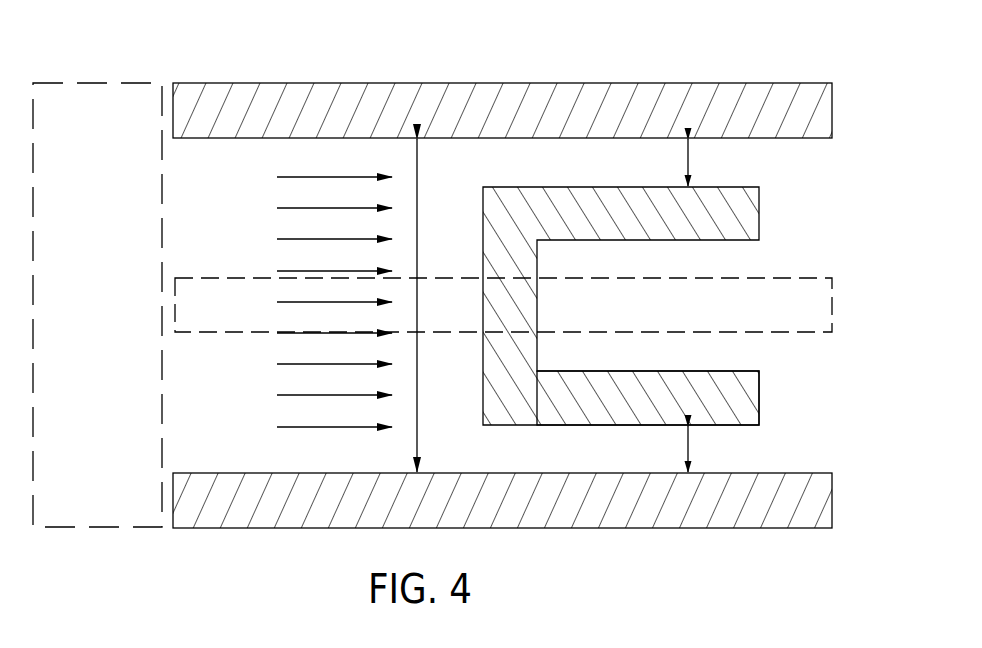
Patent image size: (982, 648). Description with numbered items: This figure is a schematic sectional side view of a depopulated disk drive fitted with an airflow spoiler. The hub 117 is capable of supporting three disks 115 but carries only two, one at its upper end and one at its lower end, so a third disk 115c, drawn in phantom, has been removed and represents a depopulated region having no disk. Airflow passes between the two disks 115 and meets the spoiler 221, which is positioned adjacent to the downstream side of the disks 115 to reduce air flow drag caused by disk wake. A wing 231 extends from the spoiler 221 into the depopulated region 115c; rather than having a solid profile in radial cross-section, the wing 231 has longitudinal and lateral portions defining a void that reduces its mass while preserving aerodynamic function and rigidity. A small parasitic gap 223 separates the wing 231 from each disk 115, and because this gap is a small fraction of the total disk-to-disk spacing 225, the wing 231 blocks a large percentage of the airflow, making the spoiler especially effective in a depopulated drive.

The hub 117 is at (97, 265).
The disks 115 is at (807, 113).
The third disk (depopulated region) 115c is at (783, 278).
The spoiler 221 is at (770, 210).
The wing 231 is at (740, 395).
The disk-to-disk spacing 225 is at (417, 173).
The parasitic gap 223 is at (688, 165).